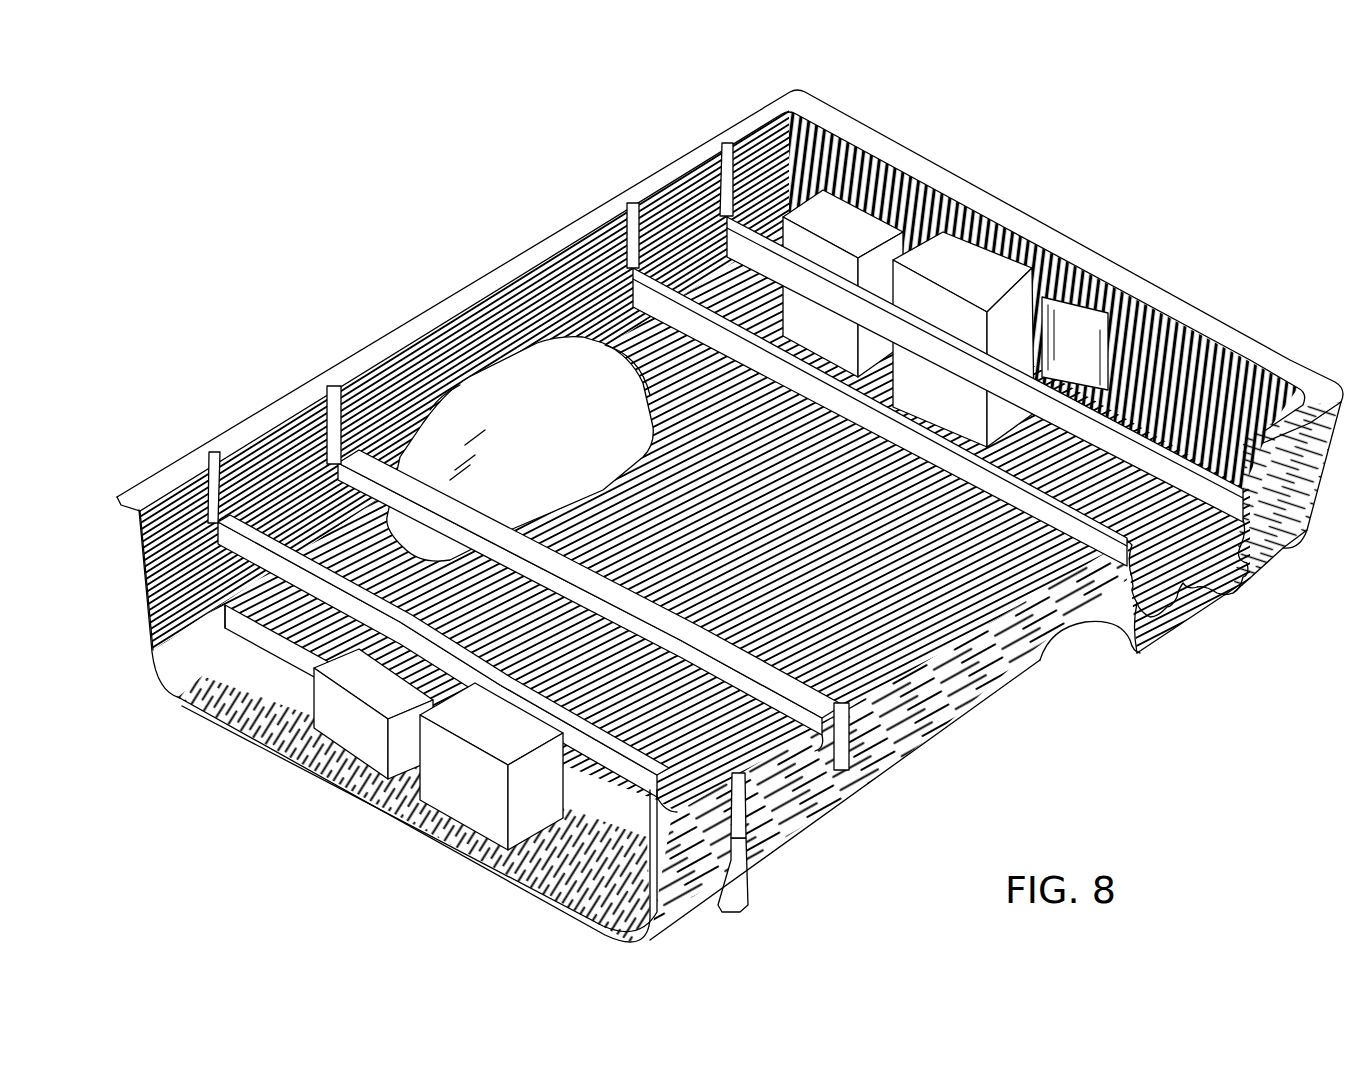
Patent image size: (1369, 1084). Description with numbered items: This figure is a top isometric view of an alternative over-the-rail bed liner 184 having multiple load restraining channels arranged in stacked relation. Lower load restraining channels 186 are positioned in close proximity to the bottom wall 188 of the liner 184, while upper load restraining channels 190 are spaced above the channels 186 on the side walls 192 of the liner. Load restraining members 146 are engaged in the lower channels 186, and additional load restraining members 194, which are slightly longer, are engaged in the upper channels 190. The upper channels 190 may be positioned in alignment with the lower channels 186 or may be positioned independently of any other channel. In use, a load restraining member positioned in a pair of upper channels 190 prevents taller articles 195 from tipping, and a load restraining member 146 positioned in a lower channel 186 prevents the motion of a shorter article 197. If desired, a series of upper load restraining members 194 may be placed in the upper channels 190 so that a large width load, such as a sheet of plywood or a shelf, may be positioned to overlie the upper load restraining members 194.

The bed liner 184 is at (730, 516).
The load restraining channels 186 is at (240, 657).
The bottom wall 188 is at (390, 815).
The load restraining channels 190 is at (727, 157).
The side walls 192 is at (150, 583).
The load restraining members 194 is at (633, 292).
The taller articles 195 is at (826, 235).
The shorter article 197 is at (349, 729).
The load restraining members 146 is at (288, 657).